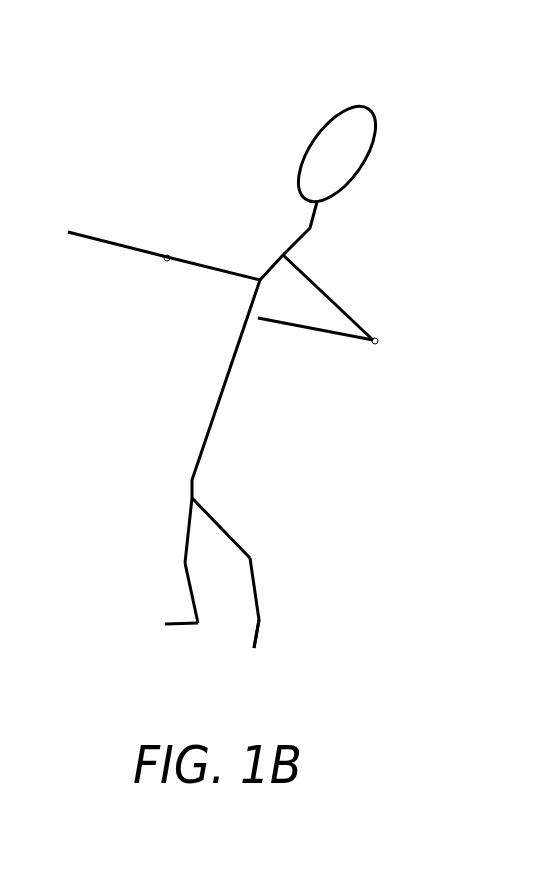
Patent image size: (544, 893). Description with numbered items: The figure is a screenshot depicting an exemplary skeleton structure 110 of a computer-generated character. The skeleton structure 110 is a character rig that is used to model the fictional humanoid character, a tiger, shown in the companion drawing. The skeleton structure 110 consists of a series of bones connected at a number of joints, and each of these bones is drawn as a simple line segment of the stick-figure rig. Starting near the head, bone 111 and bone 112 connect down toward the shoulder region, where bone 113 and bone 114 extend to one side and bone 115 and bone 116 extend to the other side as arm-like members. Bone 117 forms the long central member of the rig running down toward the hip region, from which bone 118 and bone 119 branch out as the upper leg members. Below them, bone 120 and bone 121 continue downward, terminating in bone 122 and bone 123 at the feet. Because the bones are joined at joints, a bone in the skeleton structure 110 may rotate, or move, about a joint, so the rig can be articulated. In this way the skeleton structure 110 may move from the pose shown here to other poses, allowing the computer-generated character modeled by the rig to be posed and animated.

The skeleton structure 110 is at (432, 87).
The bone 111 is at (315, 215).
The bone 112 is at (292, 240).
The bone 113 is at (332, 292).
The bone 114 is at (307, 330).
The bone 115 is at (120, 243).
The bone 116 is at (205, 268).
The bone 117 is at (210, 435).
The bone 118 is at (187, 533).
The bone 119 is at (223, 528).
The bone 120 is at (190, 592).
The bone 121 is at (257, 590).
The bone 122 is at (185, 625).
The bone 123 is at (257, 635).